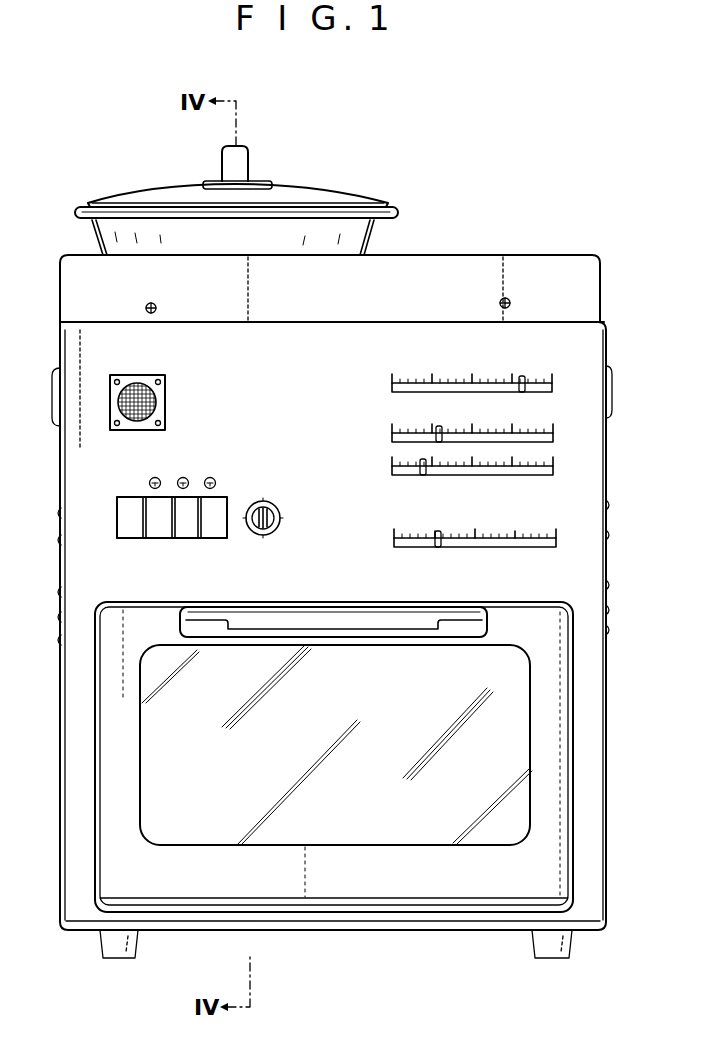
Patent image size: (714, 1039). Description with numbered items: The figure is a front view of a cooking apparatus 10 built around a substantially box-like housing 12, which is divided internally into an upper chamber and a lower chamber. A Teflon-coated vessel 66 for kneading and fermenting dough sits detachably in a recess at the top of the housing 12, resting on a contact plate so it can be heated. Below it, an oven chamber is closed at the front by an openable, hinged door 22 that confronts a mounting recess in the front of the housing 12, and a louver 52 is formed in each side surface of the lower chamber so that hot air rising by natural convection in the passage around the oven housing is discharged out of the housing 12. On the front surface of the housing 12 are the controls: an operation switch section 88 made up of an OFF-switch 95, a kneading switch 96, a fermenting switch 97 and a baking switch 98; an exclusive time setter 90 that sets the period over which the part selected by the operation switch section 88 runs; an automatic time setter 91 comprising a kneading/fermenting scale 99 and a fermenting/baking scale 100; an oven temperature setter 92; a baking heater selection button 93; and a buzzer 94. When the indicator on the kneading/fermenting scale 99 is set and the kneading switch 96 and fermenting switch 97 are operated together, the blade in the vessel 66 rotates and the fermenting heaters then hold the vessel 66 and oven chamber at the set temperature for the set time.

The cooking apparatus 10 is at (500, 214).
The housing 12 is at (598, 343).
The door 22 is at (103, 611).
The louver 52 is at (57, 620).
The vessel 66 is at (371, 234).
The operation switch section 88 is at (127, 493).
The exclusive time setter 90 is at (408, 376).
The automatic time setter 91 is at (382, 421).
The oven temperature setter 92 is at (393, 542).
The baking heater selection button 93 is at (258, 500).
The buzzer 94 is at (166, 405).
The OFF-switch 95 is at (130, 540).
The kneading switch 96 is at (160, 540).
The fermenting switch 97 is at (187, 540).
The baking switch 98 is at (215, 540).
The kneading/fermenting scale 99 is at (388, 441).
The fermenting/baking scale 100 is at (392, 470).